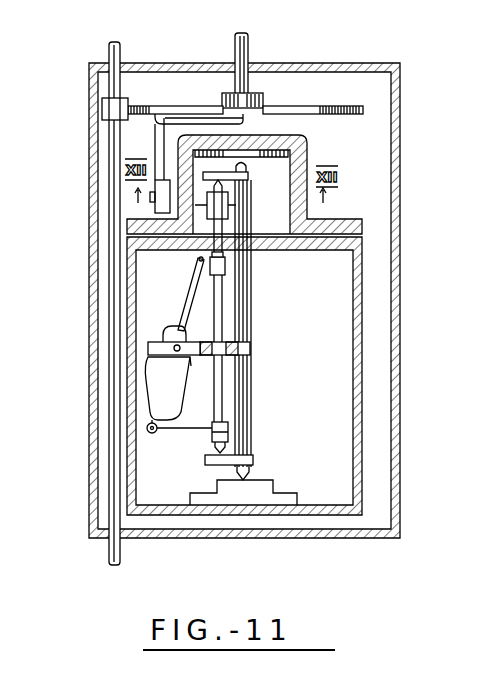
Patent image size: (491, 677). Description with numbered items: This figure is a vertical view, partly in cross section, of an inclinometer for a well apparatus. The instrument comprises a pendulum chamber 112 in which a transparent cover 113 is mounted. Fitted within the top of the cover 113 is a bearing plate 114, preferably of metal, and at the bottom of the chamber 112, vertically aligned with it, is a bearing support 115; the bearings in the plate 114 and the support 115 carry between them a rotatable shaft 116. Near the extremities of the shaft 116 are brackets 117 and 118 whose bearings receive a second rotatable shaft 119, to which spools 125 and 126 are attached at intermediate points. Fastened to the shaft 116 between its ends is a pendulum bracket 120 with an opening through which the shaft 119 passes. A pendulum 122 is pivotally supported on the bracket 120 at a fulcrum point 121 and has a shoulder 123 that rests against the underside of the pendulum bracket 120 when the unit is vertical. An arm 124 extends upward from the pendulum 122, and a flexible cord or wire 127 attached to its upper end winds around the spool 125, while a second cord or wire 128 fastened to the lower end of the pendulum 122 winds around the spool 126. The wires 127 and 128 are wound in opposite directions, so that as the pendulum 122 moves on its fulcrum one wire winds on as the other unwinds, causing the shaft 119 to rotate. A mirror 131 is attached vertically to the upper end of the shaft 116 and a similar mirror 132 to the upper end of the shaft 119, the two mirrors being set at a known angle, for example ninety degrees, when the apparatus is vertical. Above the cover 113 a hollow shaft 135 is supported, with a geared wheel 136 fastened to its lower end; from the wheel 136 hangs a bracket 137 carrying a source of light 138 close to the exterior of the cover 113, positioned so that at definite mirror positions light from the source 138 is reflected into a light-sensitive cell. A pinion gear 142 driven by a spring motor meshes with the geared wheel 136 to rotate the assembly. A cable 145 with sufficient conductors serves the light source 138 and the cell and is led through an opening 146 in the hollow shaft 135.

The pendulum chamber 112 is at (363, 383).
The transparent cover 113 is at (307, 206).
The bearing plate 114 is at (307, 146).
The bearing support 115 is at (276, 487).
The rotatable shaft 116 is at (252, 325).
The bracket 117 is at (246, 175).
The bracket 118 is at (254, 460).
The rotatable shaft 119 is at (248, 293).
The pendulum bracket 120 is at (250, 352).
The fulcrum point 121 is at (148, 348).
The pendulum 122 is at (150, 395).
The shoulder 123 is at (200, 371).
The arm 124 is at (192, 296).
The spool 125 is at (226, 268).
The spool 126 is at (229, 428).
The cord or wire 127 is at (200, 261).
The cord or wire 128 is at (190, 430).
The mirror 131 is at (223, 200).
The mirror 132 is at (229, 214).
The shaft 135 is at (249, 49).
The geared wheel 136 is at (363, 111).
The bracket 137 is at (157, 150).
The source of light 138 is at (165, 208).
The pinion gear 142 is at (102, 108).
The cable 145 is at (197, 106).
The opening 146 is at (264, 102).